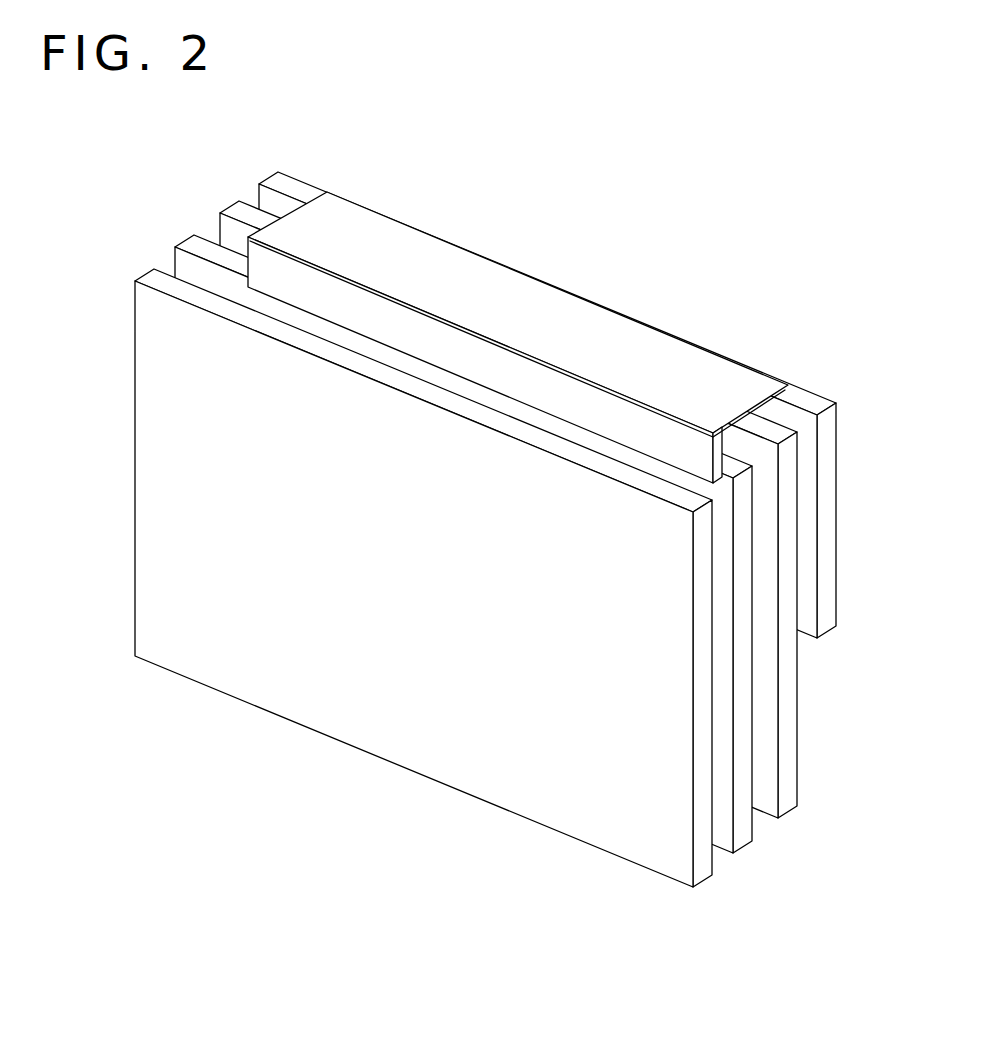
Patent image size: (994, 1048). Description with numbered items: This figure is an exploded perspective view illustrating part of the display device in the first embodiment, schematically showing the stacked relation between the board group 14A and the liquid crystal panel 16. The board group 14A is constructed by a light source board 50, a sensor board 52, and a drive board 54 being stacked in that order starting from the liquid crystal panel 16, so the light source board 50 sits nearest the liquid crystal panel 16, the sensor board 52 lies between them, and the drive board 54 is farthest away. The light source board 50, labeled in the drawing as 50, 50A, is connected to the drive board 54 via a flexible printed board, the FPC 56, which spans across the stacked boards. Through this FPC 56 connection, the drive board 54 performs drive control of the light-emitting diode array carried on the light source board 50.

The board group 14A is at (480, 507).
The liquid crystal panel 16 is at (475, 782).
The light source board 50 is at (496, 545).
The backlight unit (LED) 50A is at (743, 832).
The sensor board 52 is at (787, 795).
The drive board 54 is at (830, 613).
The FPC 56 is at (653, 350).